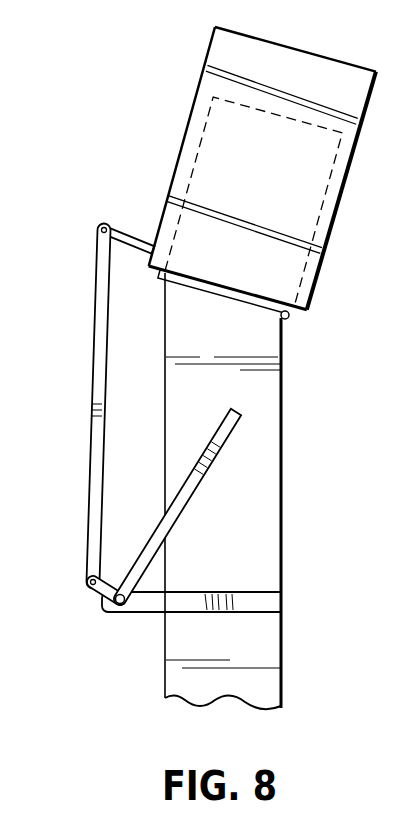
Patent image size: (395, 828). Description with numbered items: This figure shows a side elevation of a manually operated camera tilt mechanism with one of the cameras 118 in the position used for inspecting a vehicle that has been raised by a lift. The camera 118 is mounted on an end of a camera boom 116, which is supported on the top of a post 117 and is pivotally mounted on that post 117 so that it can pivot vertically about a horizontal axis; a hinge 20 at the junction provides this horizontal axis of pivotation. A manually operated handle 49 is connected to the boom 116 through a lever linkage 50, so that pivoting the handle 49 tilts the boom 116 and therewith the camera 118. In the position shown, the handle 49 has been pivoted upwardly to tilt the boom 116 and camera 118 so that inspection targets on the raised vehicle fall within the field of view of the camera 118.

The hinge 20 is at (289, 317).
The manually operated handle 49 is at (192, 497).
The lever linkage 50 is at (85, 352).
The camera boom 116 is at (207, 100).
The post 117 is at (262, 473).
The camera 118 is at (186, 128).